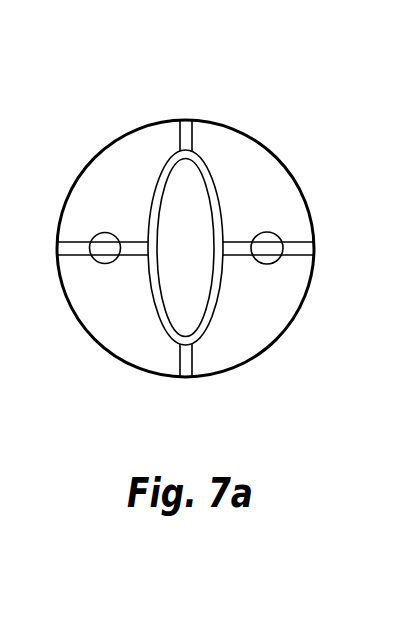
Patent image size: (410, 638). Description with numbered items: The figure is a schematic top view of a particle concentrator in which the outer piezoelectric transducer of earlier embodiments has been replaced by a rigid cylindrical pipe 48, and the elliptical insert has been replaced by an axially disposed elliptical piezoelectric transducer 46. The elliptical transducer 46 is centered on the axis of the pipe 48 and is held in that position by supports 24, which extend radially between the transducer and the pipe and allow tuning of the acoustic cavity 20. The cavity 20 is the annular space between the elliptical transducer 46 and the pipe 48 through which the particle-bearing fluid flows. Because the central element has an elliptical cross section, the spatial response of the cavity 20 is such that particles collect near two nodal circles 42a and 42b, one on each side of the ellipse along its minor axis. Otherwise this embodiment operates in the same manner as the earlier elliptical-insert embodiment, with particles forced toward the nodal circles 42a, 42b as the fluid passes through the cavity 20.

The cavity 20 is at (176, 220).
The supports 24 is at (177, 137).
The nodal circle 42a is at (102, 272).
The nodal circle 42b is at (275, 228).
The elliptical piezoelectric transducer 46 is at (155, 310).
The rigid cylindrical pipe 48 is at (247, 128).